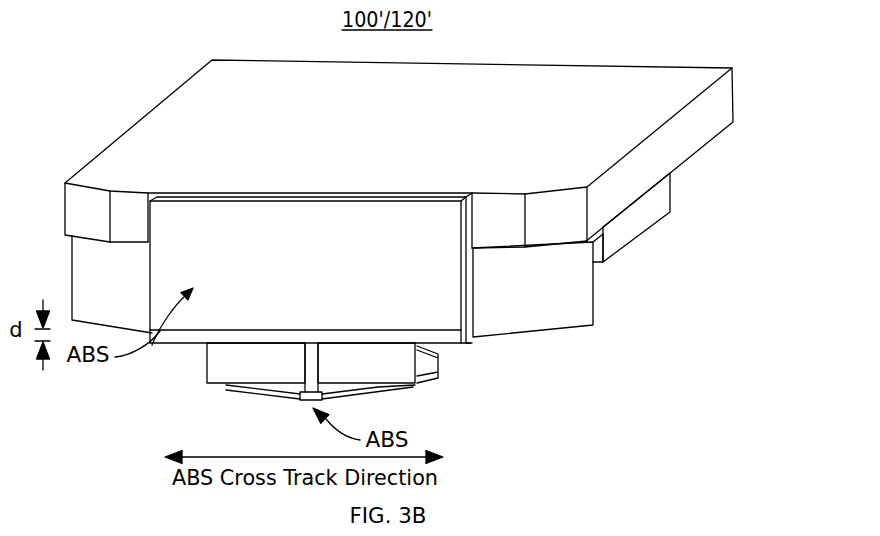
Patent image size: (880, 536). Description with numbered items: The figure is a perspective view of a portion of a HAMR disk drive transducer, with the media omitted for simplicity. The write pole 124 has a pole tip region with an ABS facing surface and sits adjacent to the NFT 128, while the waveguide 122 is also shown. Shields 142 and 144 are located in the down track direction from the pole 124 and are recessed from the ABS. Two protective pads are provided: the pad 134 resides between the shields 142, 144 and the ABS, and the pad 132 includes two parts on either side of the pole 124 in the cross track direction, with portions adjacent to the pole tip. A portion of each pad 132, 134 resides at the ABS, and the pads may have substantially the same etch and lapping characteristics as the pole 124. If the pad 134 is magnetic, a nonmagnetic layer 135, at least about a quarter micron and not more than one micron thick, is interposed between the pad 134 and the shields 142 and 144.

The shield 144 is at (652, 68).
The protective pad 134 is at (148, 222).
The shield 142 is at (72, 282).
The nonmagnetic layer 135 is at (470, 342).
The protective pad 132 is at (205, 358).
The waveguide 122 is at (232, 387).
The write pole 124 is at (318, 370).
The NFT 128 is at (309, 401).